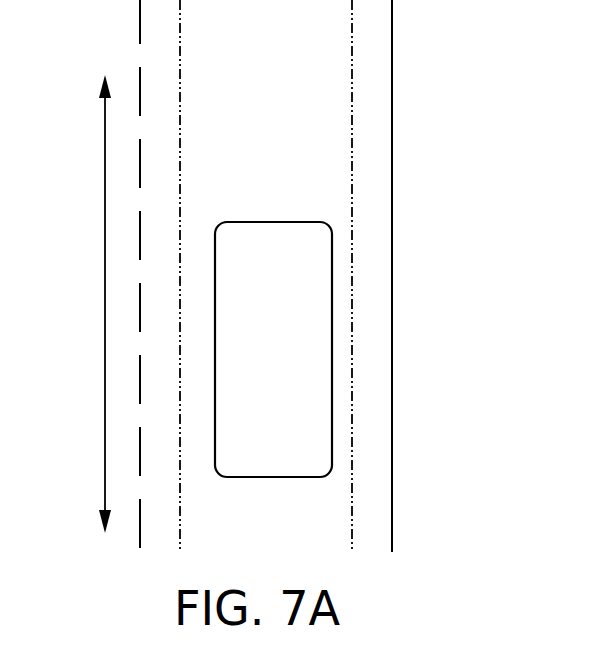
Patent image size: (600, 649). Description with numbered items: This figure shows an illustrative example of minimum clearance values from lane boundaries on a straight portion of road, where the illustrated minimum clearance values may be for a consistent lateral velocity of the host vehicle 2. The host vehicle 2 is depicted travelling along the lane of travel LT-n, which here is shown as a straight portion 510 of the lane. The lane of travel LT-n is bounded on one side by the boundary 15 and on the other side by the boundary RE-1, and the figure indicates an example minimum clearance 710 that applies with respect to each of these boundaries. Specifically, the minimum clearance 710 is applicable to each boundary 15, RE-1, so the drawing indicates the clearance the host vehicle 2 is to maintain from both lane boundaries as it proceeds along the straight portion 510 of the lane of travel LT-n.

The boundary 15 is at (139, 543).
The minimum clearance 710 is at (180, 48).
The boundary RE-1 is at (393, 41).
The host vehicle 2 is at (314, 343).
The lane of travel LT-n is at (313, 520).
The straight portion 510 is at (104, 302).